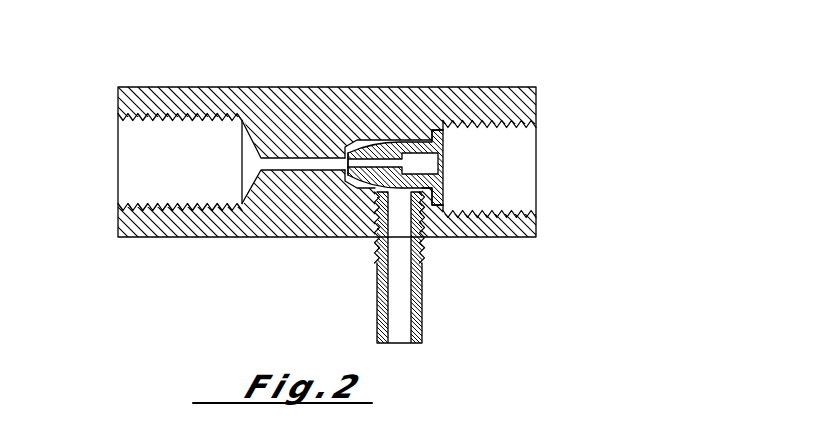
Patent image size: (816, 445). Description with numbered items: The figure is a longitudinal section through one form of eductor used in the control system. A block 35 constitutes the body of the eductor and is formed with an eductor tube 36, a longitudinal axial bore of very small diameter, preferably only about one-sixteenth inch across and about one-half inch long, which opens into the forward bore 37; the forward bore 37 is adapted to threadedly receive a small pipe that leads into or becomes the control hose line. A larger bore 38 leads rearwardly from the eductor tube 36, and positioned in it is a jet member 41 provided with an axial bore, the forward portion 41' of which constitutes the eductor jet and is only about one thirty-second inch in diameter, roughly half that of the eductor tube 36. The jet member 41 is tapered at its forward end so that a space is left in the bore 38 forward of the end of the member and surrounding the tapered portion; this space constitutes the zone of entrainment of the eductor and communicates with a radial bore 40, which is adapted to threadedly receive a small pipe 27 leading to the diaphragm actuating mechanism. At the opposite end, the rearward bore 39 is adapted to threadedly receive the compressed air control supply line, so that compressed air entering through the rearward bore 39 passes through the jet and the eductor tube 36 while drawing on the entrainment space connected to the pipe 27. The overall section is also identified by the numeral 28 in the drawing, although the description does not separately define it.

The small pipe 27 is at (403, 302).
The nozzle body 28 is at (353, 84).
The block 35 is at (377, 106).
The eductor tube 36 is at (293, 157).
The forward bore 37 is at (143, 129).
The larger bore 38 is at (378, 162).
The rearward bore 39 is at (518, 168).
The radial bore 40 is at (424, 238).
The jet member 41 is at (344, 212).
The forward portion of the axial bore 41' is at (436, 115).